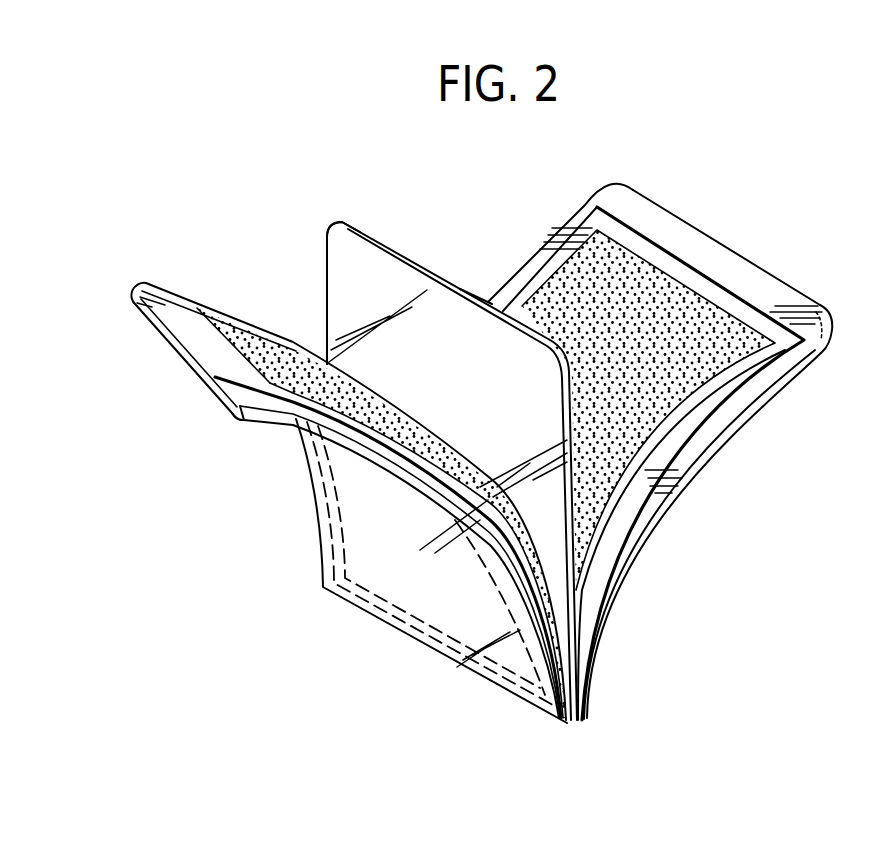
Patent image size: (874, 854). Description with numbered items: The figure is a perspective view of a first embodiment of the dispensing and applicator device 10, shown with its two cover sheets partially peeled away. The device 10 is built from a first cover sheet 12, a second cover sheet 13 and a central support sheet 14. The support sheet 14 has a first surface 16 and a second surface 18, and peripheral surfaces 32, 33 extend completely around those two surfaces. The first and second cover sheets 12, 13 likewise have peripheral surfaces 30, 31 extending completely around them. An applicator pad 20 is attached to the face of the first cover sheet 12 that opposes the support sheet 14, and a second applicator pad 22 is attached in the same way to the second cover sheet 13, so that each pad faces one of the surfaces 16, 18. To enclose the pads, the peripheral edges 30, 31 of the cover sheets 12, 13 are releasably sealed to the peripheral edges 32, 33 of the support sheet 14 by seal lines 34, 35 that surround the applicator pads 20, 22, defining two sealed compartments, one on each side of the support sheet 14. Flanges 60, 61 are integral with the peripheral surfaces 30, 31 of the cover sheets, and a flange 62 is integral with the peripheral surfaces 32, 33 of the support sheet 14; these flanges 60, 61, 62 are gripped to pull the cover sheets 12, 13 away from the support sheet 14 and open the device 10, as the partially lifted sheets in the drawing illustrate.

The dispensing and applicator device 10 is at (757, 236).
The first cover sheet 12 is at (218, 402).
The second cover sheet 13 is at (822, 306).
The support sheet 14 is at (400, 241).
The first surface 16 is at (378, 230).
The second surface 18 is at (576, 592).
The applicator pad 20 is at (234, 325).
The applicator pad 22 is at (620, 257).
The peripheral surface 30 is at (200, 359).
The peripheral surface 31 is at (560, 228).
The peripheral surface 32 is at (338, 292).
The peripheral surface 33 is at (477, 291).
The seal line 34 is at (229, 421).
The seal line 35 is at (695, 267).
The flange 60 is at (176, 321).
The flange 61 is at (765, 285).
The flange 62 is at (440, 287).